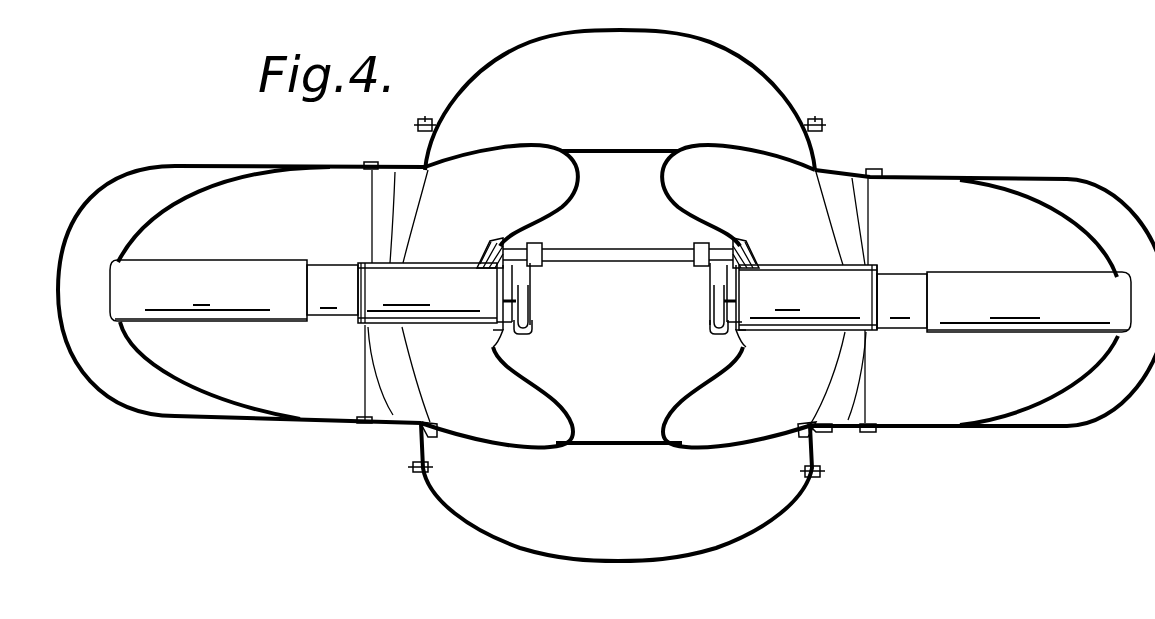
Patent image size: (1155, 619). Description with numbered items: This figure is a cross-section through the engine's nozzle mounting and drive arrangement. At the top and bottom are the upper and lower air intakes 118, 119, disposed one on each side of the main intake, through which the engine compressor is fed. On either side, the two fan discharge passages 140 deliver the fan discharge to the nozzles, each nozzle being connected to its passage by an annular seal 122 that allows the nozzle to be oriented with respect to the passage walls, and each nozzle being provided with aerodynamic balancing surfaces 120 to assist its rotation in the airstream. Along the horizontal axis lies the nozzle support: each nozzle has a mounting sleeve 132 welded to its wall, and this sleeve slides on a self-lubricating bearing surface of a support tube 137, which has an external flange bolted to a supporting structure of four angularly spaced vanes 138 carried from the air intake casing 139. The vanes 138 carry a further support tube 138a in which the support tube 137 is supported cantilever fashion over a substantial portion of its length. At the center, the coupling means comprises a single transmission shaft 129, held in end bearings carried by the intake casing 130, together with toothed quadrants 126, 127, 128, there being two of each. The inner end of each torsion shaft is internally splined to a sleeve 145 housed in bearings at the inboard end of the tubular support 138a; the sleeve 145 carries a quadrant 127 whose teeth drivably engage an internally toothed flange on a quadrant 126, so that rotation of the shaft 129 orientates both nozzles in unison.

The upper air intake 118 is at (548, 74).
The lower air intake 119 is at (762, 494).
The aerodynamic balancing surfaces 120 is at (167, 190).
The annular seals 122 is at (872, 168).
The toothed quadrant 126 is at (533, 318).
The toothed quadrant 127 is at (531, 292).
The toothed quadrant 128 is at (530, 300).
The transmission shaft 129 is at (587, 257).
The intake casing 130 is at (730, 233).
The mounting sleeve 132 is at (207, 277).
The support tube 137 is at (333, 273).
The vanes 138 is at (390, 231).
The further support tube 138a is at (447, 260).
The air intake casing 139 is at (826, 432).
The fan discharge passage 140 is at (460, 173).
The sleeve 145 is at (505, 315).